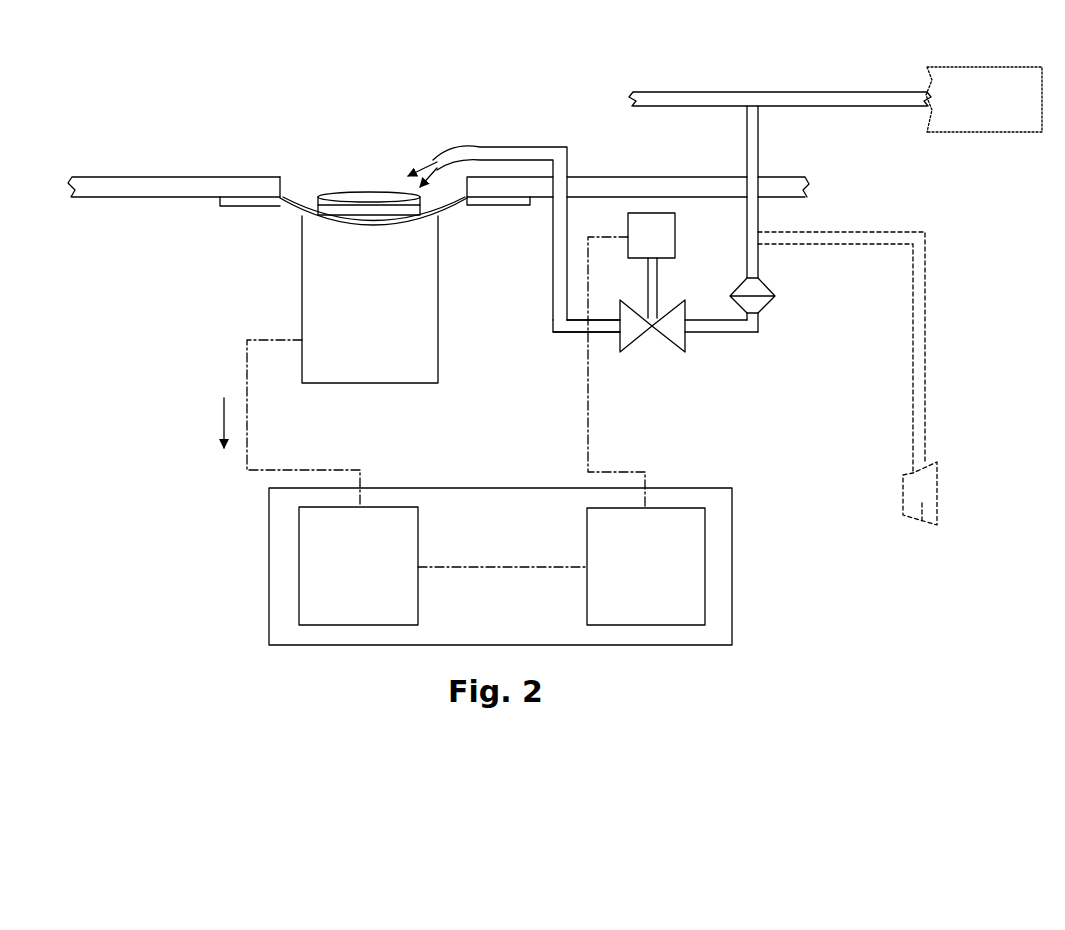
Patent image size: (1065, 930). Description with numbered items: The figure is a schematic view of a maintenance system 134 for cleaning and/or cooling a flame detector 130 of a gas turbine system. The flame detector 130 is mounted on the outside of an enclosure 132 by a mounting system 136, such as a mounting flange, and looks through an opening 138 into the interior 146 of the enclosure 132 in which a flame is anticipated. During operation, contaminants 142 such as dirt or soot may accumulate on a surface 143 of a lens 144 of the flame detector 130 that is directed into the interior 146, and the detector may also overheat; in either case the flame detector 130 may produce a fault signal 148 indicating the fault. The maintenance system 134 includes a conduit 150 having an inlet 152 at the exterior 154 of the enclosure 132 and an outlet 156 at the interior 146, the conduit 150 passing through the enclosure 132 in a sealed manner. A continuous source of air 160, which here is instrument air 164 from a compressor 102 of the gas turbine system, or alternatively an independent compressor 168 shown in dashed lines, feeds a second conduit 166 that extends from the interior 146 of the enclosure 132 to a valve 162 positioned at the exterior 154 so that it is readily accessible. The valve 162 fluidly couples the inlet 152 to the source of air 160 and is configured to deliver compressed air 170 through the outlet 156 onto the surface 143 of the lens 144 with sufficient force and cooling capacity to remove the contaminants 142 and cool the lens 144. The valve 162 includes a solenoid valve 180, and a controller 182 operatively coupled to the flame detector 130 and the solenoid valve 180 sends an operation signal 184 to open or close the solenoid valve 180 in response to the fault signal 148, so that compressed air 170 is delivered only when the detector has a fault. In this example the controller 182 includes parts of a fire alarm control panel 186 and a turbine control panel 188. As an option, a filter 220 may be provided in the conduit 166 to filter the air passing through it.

The compressor 102 is at (977, 107).
The flame detector 130 is at (318, 299).
The enclosure 132 is at (157, 188).
The maintenance system 134 is at (750, 520).
The mounting system 136 is at (455, 216).
The opening 138 is at (287, 190).
The contaminants 142 is at (370, 196).
The surface 143 is at (351, 172).
The lens 144 is at (330, 197).
The interior 146 is at (383, 107).
The fault signal 148 is at (246, 423).
The conduit 150 is at (553, 303).
The inlet 152 is at (603, 334).
The exterior 154 is at (810, 345).
The outlet 156 is at (524, 147).
The source of air 160 is at (780, 71).
The valve 162 is at (673, 332).
The instrument air 164 is at (858, 91).
The conduit 166 is at (760, 262).
The independent compressor 168 is at (922, 522).
The compressed air 170 is at (405, 175).
The solenoid valve 180 is at (653, 216).
The controller 182 is at (539, 587).
The operation signal 184 is at (588, 420).
The fire alarm control panel (FACP) 186 is at (358, 626).
The turbine control panel (TCP) 188 is at (647, 610).
The filter 220 is at (775, 298).